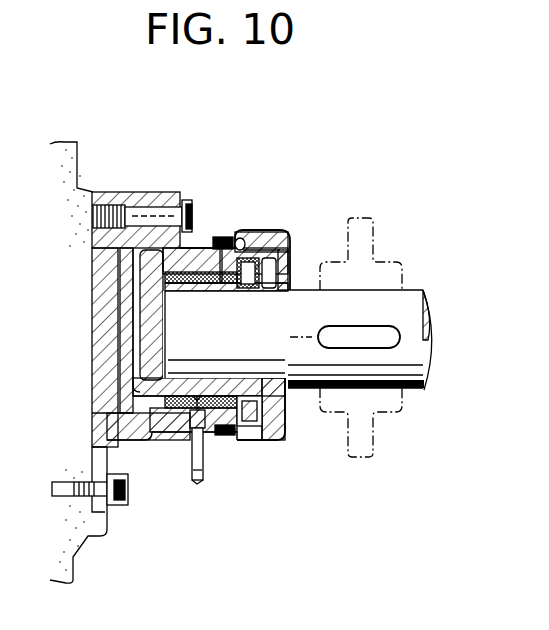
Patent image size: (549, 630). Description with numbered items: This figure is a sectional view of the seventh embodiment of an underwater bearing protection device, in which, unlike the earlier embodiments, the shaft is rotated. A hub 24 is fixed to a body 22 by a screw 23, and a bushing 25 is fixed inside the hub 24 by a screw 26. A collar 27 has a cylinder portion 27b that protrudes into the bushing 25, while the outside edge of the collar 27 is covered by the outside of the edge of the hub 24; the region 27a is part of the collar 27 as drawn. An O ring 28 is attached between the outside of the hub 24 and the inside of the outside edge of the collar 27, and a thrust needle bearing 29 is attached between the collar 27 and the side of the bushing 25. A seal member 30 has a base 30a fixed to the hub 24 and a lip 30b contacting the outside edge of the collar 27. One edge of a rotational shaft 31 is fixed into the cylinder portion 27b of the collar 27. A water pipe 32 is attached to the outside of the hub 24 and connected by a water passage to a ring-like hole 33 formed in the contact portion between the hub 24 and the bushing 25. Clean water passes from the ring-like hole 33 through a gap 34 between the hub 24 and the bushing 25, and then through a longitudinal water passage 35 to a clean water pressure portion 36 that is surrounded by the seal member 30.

The body 22 is at (112, 205).
The screw 23 is at (189, 200).
The hub 24 is at (150, 440).
The bushing 25 is at (244, 250).
The screw 26 is at (286, 430).
The collar 27 is at (298, 230).
The housing side wall 27a is at (147, 349).
The cylinder portion 27b is at (264, 445).
The O ring 28 is at (238, 240).
The thrust needle bearing 29 is at (276, 272).
The seal member 30 is at (192, 442).
The base 30a is at (214, 238).
The lip 30b is at (223, 436).
The rotational shaft 31 is at (412, 355).
The water pipe 32 is at (199, 482).
The ring-like hole 33 is at (204, 396).
The gap 34 is at (183, 285).
The longitudinal water passage 35 is at (242, 286).
The clean water pressure portion 36 is at (246, 396).